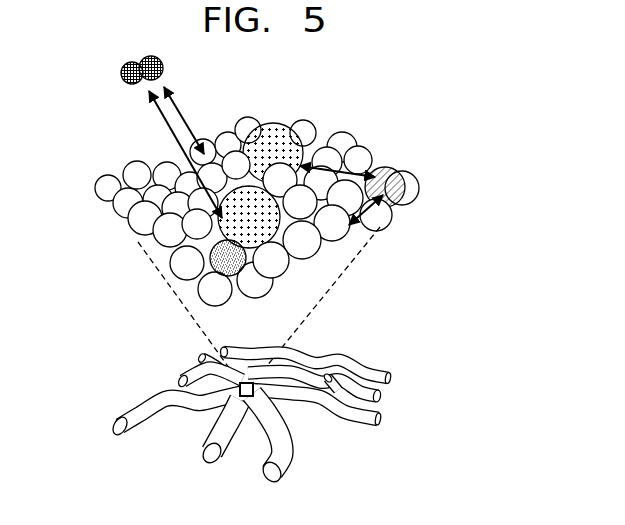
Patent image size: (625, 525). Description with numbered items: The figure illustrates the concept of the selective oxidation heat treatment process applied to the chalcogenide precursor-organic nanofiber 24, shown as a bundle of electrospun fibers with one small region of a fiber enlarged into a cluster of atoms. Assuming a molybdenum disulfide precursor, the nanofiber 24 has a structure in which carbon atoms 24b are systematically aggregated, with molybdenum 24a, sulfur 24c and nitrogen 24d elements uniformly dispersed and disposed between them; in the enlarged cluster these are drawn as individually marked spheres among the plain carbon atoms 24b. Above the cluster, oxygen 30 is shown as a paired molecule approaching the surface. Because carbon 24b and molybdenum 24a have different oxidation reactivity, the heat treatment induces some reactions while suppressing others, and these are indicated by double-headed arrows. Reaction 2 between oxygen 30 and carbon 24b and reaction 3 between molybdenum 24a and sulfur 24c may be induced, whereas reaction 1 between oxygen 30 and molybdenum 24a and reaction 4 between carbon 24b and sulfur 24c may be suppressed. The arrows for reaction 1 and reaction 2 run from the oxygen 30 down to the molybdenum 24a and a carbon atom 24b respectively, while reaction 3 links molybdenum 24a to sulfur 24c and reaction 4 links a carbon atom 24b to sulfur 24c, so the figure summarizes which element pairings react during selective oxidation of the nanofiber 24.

The chalcogenide precursor-organic nanofiber 24 is at (314, 433).
The molybdenum 24a is at (221, 227).
The carbon atoms 24b is at (137, 226).
The sulfur 24c is at (397, 172).
The nitrogen 24d is at (212, 267).
The oxygen 30 is at (121, 74).
The reaction 1 is at (185, 154).
The reaction 2 is at (184, 120).
The reaction 3 is at (337, 164).
The reaction 4 is at (366, 210).